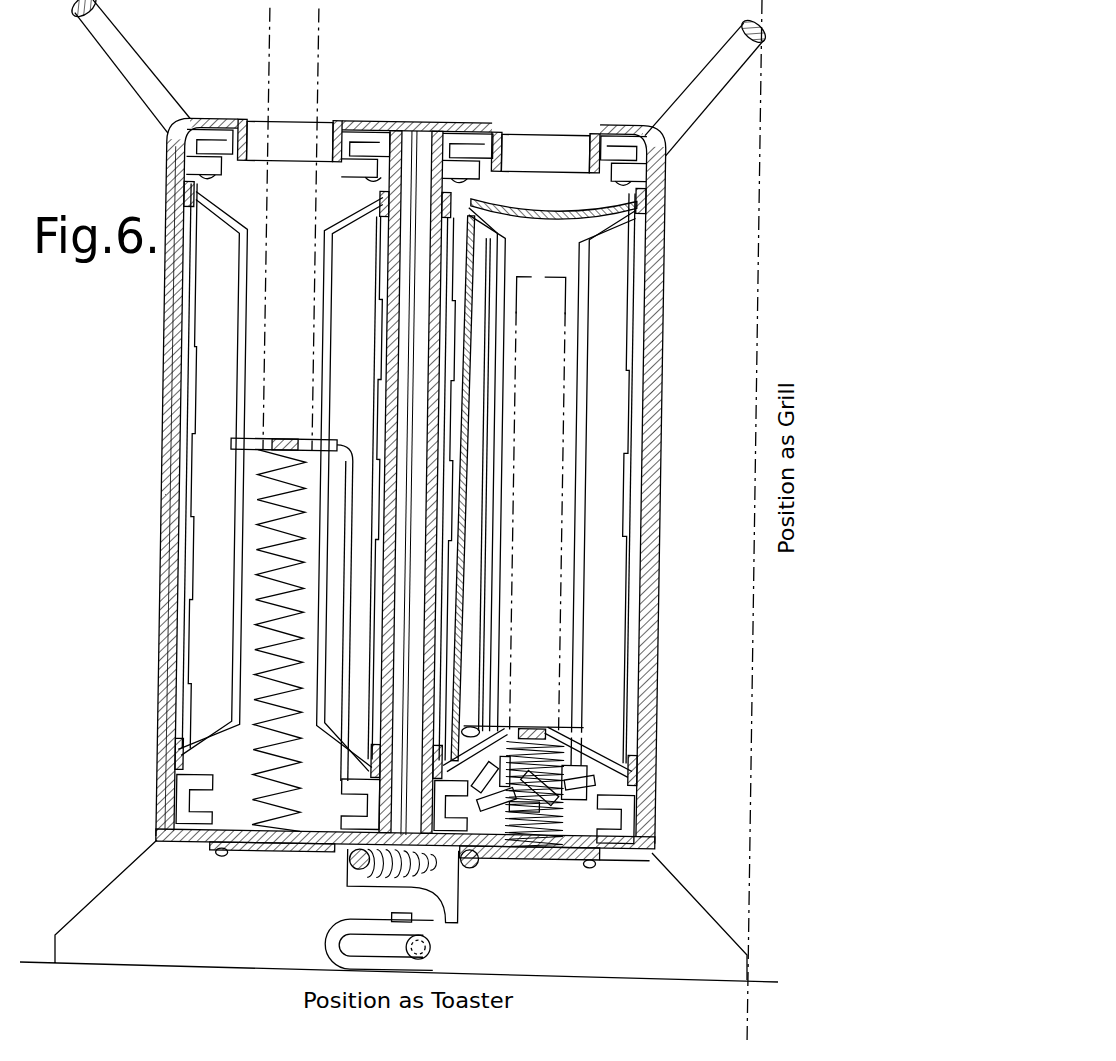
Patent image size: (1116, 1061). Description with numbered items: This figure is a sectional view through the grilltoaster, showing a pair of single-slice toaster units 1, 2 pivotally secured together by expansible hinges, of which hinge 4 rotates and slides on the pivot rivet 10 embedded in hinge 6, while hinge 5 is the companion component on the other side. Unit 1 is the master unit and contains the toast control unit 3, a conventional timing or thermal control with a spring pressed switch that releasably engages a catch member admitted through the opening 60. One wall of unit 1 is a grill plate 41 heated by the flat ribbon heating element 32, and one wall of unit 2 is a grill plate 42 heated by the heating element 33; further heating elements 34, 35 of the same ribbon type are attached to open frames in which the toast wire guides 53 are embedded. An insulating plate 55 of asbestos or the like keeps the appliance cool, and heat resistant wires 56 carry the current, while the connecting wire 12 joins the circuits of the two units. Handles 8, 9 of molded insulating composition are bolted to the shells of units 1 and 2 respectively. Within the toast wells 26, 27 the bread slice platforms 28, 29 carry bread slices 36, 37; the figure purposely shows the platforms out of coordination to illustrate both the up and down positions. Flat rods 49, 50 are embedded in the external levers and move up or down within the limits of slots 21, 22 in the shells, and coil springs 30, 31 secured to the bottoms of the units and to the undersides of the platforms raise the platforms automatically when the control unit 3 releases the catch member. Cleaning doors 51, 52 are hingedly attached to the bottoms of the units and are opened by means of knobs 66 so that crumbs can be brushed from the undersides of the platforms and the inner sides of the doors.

The toaster unit 1 is at (665, 485).
The toaster unit 2 is at (170, 430).
The toast control unit 3 is at (619, 852).
The expansible hinge 4 is at (694, 892).
The expansible hinge 5 is at (595, 735).
The expansible hinge 6 is at (112, 878).
The handle 8 is at (715, 72).
The handle 9 is at (112, 52).
The pivot rivet 10 is at (441, 940).
The connecting wire 12 is at (438, 864).
The slot 21 is at (489, 537).
The slot 22 is at (357, 512).
The toast well 26 is at (543, 131).
The toast well 27 is at (328, 122).
The bread slice platform 28 is at (599, 726).
The bread slice platform 29 is at (255, 452).
The coil spring 30 is at (528, 752).
The coil spring 31 is at (262, 580).
The heating element 32 is at (470, 345).
The heating element 33 is at (383, 320).
The heating element 34 is at (633, 530).
The heating element 35 is at (200, 688).
The bread slice 36 is at (554, 280).
The bread slice 37 is at (291, 210).
The grill plate 41 is at (426, 208).
The grill plate 42 is at (406, 206).
The flat rod 49 is at (485, 720).
The flat rod 50 is at (356, 454).
The cleaning door 51 is at (542, 858).
The cleaning door 52 is at (292, 853).
The toast wire guide 53 is at (327, 355).
The insulating plate 55 is at (196, 312).
The wire 56 is at (492, 272).
The opening 60 is at (607, 740).
The knob 66 is at (238, 860).